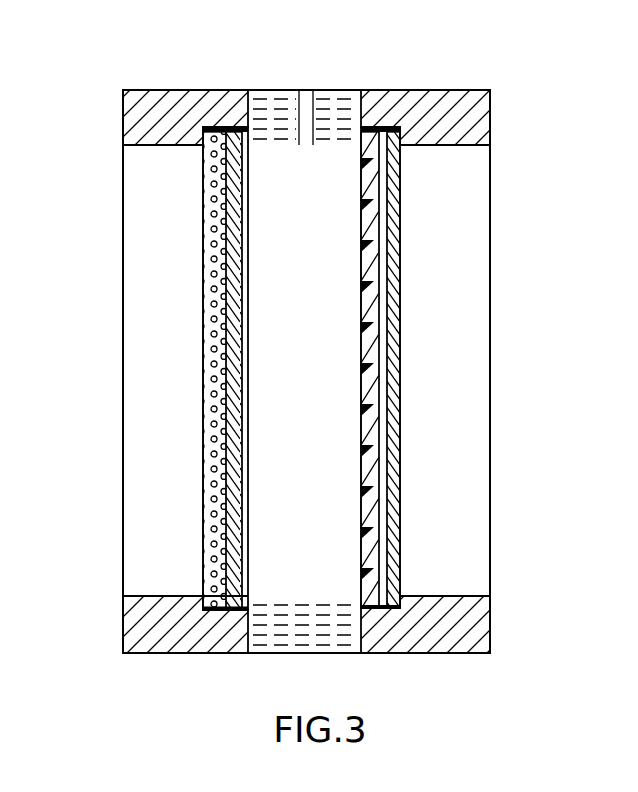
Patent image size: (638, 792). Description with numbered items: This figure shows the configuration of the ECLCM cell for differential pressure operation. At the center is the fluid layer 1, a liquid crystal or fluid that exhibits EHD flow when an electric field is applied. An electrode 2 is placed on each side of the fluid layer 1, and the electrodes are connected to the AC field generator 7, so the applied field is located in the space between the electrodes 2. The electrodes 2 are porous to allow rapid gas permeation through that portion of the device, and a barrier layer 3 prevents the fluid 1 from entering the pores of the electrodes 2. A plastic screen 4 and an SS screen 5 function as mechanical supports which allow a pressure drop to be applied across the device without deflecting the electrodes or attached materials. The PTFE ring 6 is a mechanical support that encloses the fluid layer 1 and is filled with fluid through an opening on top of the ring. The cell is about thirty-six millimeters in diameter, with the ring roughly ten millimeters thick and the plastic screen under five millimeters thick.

The fluid layer 1 is at (312, 363).
The electrode 2 is at (400, 195).
The barrier layer 3 is at (388, 368).
The plastic screen 4 is at (388, 538).
The SS screen 5 is at (205, 203).
The PTFE ring 6 is at (270, 617).
The AC field generator 7 is at (391, 128).